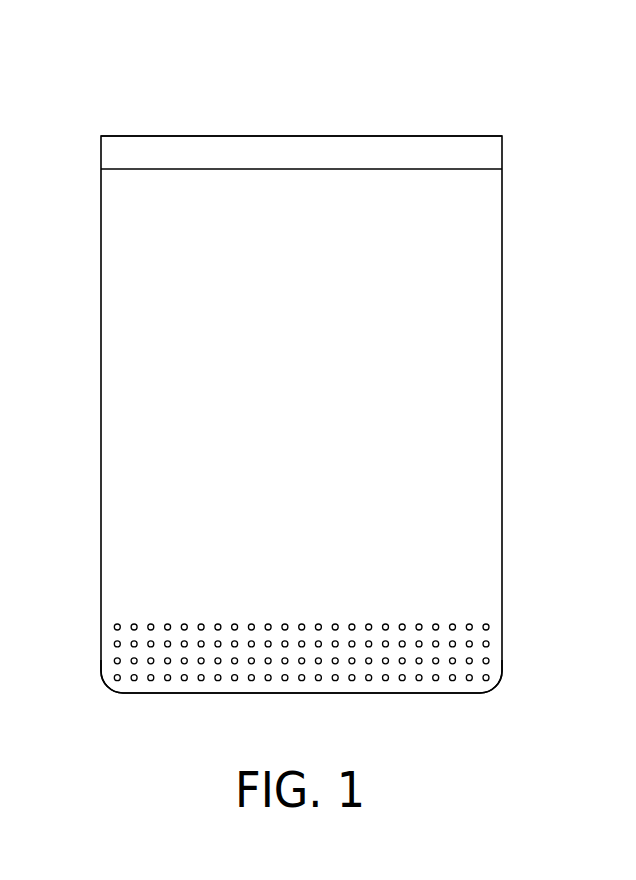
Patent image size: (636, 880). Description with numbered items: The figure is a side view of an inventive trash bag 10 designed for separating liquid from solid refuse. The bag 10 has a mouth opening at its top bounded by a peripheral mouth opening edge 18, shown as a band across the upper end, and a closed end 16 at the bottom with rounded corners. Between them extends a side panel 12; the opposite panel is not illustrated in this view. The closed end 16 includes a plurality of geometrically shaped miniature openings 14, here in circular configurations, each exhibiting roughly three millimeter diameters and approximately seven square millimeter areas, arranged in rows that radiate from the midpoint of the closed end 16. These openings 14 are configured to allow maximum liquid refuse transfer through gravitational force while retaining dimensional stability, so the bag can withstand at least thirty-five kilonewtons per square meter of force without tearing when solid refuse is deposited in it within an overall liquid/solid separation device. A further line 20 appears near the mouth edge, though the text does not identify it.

The trash bag 10 is at (128, 88).
The side panel 12 is at (483, 374).
The miniature openings 14 is at (184, 663).
The closed end 16 is at (165, 697).
The peripheral mouth opening edge 18 is at (478, 145).
The seam line 20 is at (290, 135).